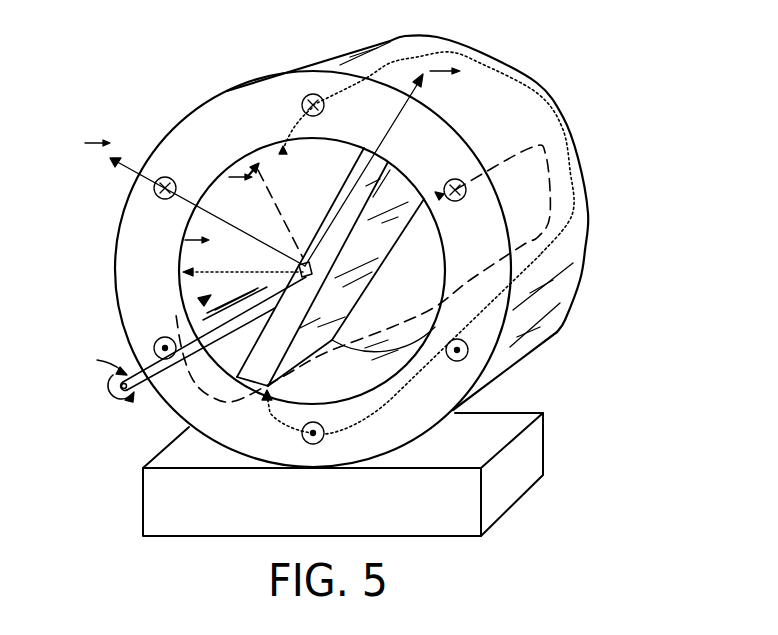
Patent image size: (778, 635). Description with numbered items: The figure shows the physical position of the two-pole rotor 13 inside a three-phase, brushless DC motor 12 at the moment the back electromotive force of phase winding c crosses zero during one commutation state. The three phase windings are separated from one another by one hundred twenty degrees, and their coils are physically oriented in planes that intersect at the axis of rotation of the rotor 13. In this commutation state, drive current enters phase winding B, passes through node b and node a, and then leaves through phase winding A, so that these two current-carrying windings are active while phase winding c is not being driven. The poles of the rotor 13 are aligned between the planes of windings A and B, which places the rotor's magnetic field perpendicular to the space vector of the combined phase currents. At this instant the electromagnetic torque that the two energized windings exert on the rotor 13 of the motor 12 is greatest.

The brushless DC motor 12 is at (634, 68).
The rotor 13 is at (386, 257).
The node a is at (321, 112).
The node b is at (173, 360).
The phase winding C c is at (465, 349).